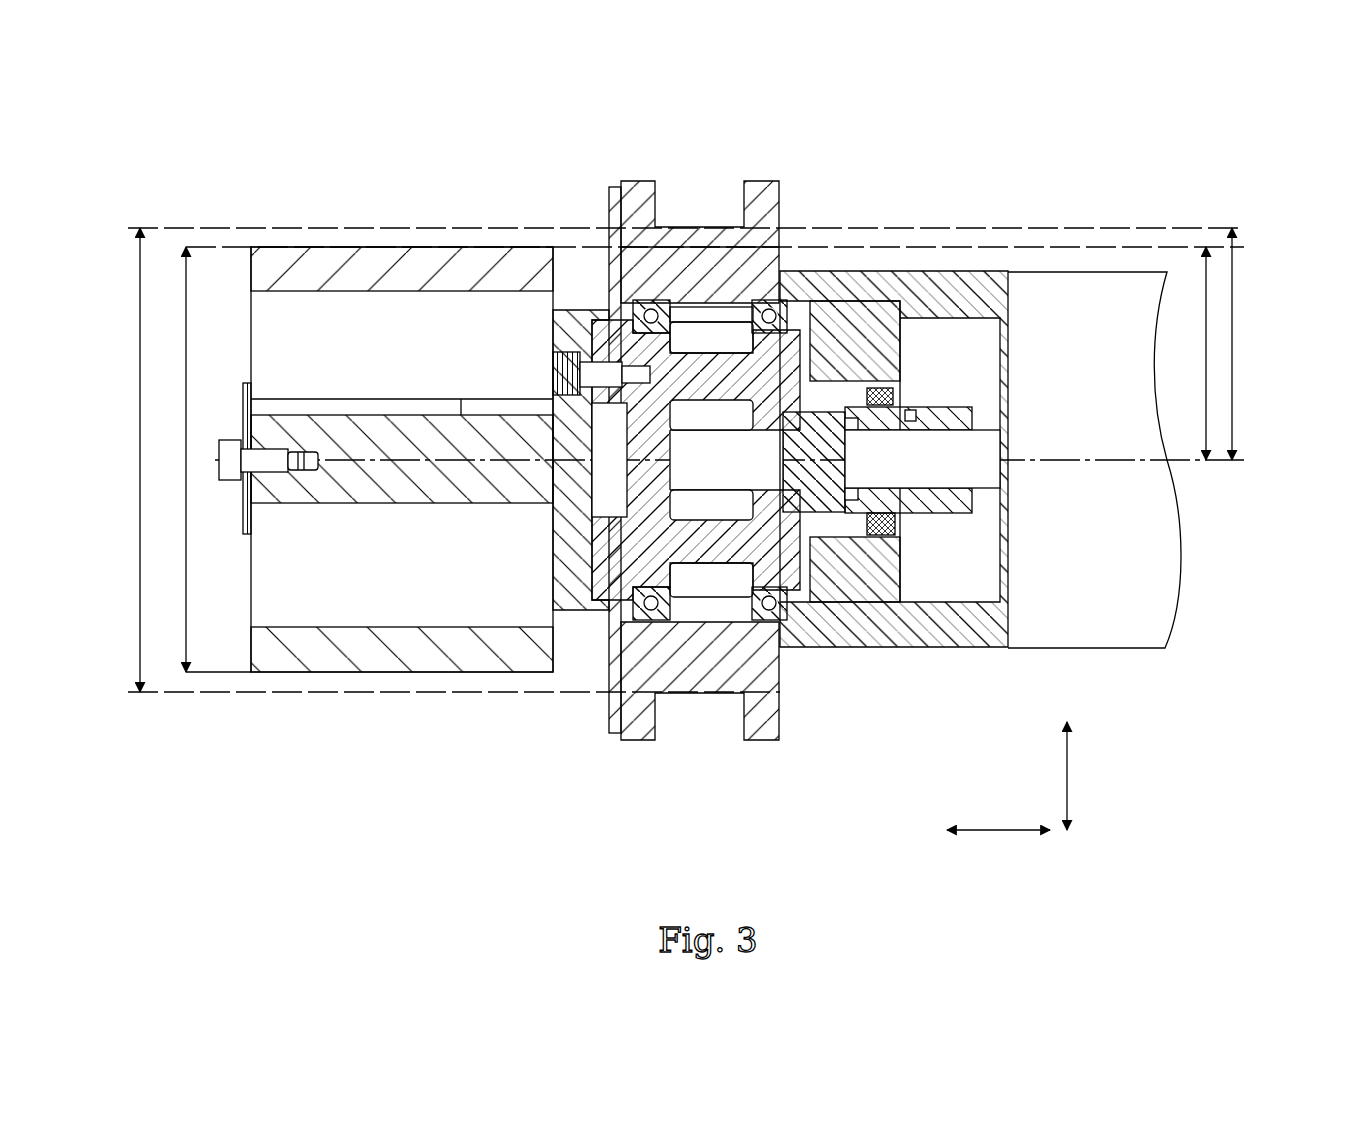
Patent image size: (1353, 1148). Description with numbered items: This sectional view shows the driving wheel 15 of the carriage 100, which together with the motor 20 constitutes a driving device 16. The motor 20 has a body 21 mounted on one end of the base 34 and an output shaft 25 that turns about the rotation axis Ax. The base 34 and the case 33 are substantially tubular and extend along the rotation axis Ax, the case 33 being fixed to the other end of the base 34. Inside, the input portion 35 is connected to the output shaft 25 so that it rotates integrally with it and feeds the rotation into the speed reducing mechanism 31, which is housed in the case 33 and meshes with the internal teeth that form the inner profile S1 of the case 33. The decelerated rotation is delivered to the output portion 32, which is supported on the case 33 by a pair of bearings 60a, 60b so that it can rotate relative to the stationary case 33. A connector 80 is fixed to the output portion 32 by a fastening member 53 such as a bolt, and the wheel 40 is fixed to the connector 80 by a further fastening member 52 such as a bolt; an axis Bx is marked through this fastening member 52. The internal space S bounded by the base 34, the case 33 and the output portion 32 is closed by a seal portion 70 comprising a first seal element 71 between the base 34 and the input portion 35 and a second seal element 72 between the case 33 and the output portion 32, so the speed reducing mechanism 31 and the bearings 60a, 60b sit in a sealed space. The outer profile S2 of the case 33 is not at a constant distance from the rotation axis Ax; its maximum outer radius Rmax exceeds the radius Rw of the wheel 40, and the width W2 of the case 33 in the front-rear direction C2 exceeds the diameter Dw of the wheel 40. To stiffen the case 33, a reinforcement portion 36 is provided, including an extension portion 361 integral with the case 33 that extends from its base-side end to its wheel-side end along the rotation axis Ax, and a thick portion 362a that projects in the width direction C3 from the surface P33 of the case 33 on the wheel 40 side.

The carriage 100 is at (276, 161).
The driving wheel 15 is at (512, 118).
The driving device 16 is at (835, 775).
The motor 20 is at (1128, 244).
The body 21 is at (1078, 282).
The output shaft 25 is at (988, 448).
The speed reducing mechanism 31 is at (737, 410).
The output portion 32 is at (612, 603).
The case 33 is at (693, 225).
The base 34 is at (957, 268).
The input portion 35 is at (950, 512).
The reinforcement portion 36 is at (794, 106).
The extension portion 361 is at (640, 181).
The thick portion 362a is at (613, 185).
The wheel 40 is at (495, 246).
The fastening member 52 is at (239, 442).
The fastening member 53 is at (551, 377).
The bearing 60a is at (620, 305).
The bearing 60b is at (812, 292).
The seal portion 70 is at (557, 218).
The first seal element 71 is at (895, 393).
The second seal element 72 is at (600, 247).
The connector 80 is at (573, 587).
The surface of the case on the wheel side P33 is at (605, 250).
The internal space S is at (834, 408).
The inner profile S1 is at (702, 684).
The outer profile S2 is at (668, 697).
The rotation axis Ax is at (1141, 470).
The bolt axis Bx is at (203, 468).
The diameter of the wheel Dw is at (167, 459).
The width of the case along the front-rear direction W2 is at (118, 460).
The radius of the wheel Rw is at (1186, 353).
The maximum outer radius Rmax is at (1264, 344).
The front-rear direction C2 is at (1085, 776).
The width direction C3 is at (998, 846).